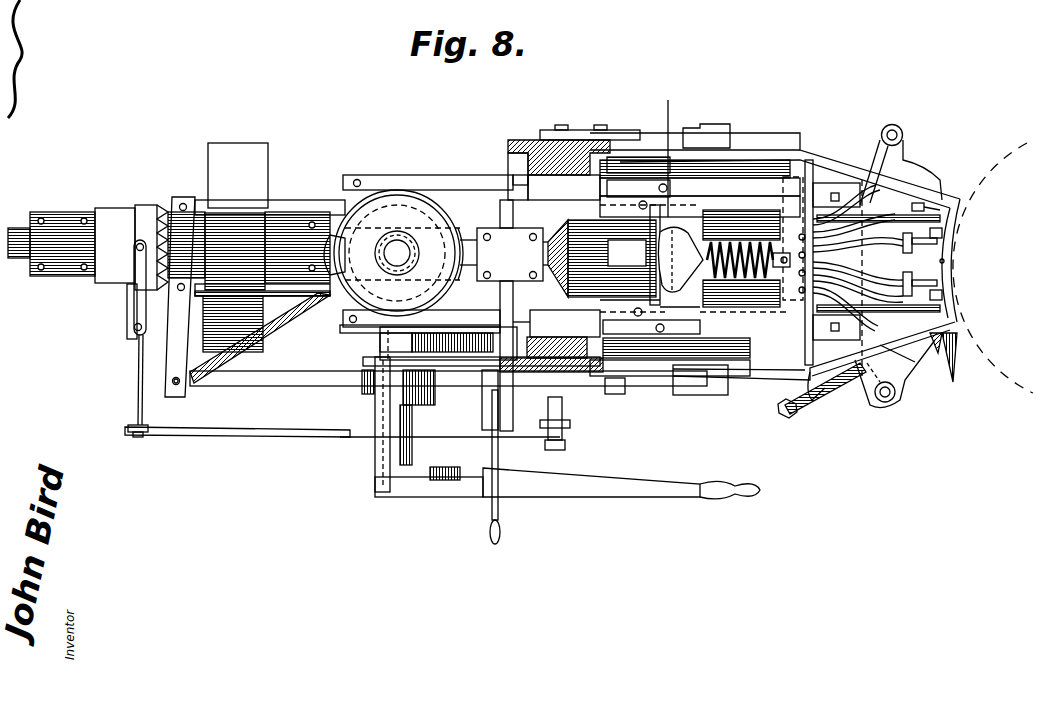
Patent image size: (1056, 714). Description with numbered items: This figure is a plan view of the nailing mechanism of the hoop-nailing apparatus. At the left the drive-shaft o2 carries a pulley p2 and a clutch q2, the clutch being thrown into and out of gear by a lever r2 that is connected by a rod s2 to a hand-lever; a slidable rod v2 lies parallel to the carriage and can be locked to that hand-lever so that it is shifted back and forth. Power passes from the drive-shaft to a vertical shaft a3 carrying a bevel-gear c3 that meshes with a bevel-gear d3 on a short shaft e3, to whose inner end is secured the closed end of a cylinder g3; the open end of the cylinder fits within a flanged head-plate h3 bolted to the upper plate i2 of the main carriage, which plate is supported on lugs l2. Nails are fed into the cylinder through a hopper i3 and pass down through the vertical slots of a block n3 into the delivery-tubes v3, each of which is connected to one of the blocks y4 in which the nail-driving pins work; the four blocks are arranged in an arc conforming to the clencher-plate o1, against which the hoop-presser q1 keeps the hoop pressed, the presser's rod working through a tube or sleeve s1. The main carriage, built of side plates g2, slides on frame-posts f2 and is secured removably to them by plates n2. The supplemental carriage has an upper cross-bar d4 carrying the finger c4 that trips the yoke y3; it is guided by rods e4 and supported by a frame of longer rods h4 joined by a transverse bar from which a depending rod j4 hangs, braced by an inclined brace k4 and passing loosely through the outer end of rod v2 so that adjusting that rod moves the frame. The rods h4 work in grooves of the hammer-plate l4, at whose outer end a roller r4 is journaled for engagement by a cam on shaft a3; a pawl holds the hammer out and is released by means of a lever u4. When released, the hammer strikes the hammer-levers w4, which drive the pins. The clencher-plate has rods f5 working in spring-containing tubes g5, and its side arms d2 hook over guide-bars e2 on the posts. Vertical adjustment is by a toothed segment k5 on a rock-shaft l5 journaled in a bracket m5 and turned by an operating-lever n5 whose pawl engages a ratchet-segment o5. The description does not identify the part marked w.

The drive-shaft o2 is at (12, 228).
The clutch q2 is at (142, 205).
The hammer-plate l4 is at (183, 204).
The depending rod j4 is at (175, 384).
The lever r2 is at (137, 372).
The pulley p2 is at (249, 216).
The rods h4 is at (293, 205).
The inclined brace k4 is at (262, 350).
The roller r4 is at (330, 240).
The bevel-gear c3 is at (380, 205).
The vertical shaft a3 is at (397, 255).
The bevel-gear d3 is at (413, 252).
The block n3 is at (490, 268).
The lugs l2 is at (589, 176).
The upper plate i2 is at (517, 315).
The plates n2 is at (515, 175).
The frame-posts f2 is at (572, 140).
The side plates g2 is at (508, 187).
The short shaft e3 is at (550, 242).
The cylinder g3 is at (612, 258).
The hopper i3 is at (676, 255).
The tubes g5 is at (740, 275).
The upper cross-bar d4 is at (805, 160).
The guide-bars e2 is at (718, 128).
The head-plate h3 is at (664, 141).
The finger c4 is at (778, 253).
The side arms d2 is at (788, 177).
The delivery-tubes v3 is at (890, 215).
The blocks y4 is at (920, 206).
The clencher-plate o1 is at (956, 257).
The hoop-presser q1 is at (956, 335).
The hammer-levers w4 is at (880, 140).
The rods f5 is at (905, 160).
The bracket w is at (805, 393).
The tube or sleeve s1 is at (875, 355).
The yoke y3 is at (690, 312).
The rods e4 is at (640, 335).
The toothed segment k5 is at (412, 342).
The bracket m5 is at (363, 360).
The slidable rod v2 is at (330, 388).
The rod s2 is at (245, 428).
The rock-shaft l5 is at (383, 497).
The ratchet-segment o5 is at (428, 480).
The lever u4 is at (498, 510).
The operating-lever n5 is at (572, 490).